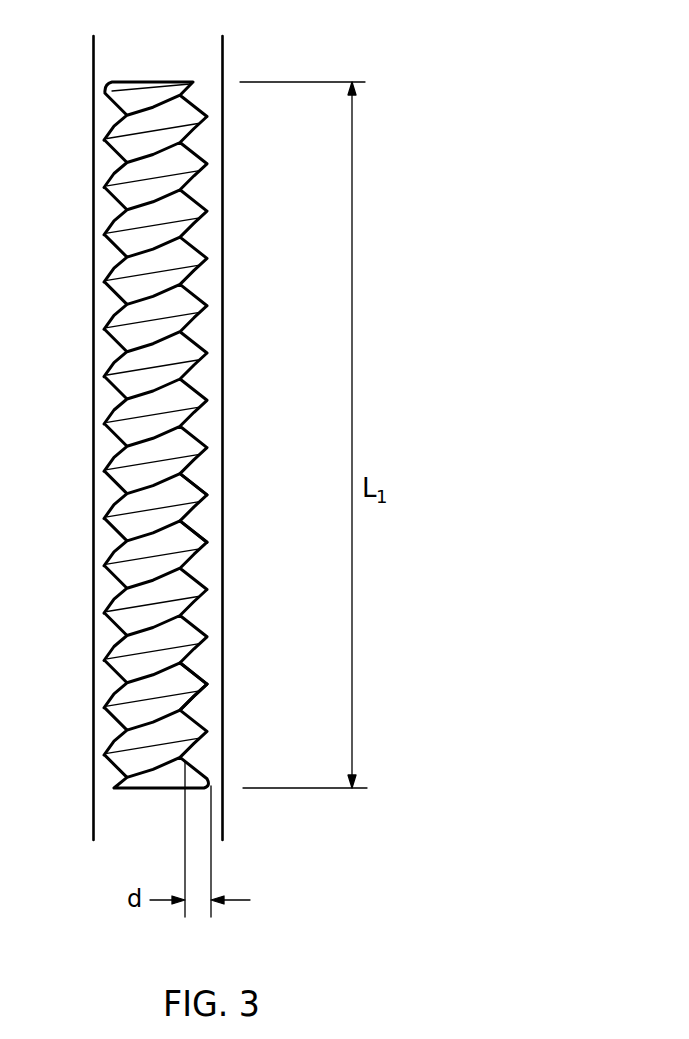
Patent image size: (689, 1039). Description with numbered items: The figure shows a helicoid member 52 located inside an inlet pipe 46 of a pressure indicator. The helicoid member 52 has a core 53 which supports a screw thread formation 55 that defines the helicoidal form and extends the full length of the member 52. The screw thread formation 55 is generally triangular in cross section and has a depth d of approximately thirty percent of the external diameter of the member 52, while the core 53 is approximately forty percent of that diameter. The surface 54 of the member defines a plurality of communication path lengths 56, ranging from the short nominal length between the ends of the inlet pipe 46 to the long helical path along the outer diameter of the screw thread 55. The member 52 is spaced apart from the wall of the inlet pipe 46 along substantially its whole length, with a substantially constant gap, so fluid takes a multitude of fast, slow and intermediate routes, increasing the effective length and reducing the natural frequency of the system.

The inlet pipe 46 is at (93, 331).
The helicoid member 52 is at (108, 514).
The core 53 is at (190, 708).
The surface 54 is at (188, 487).
The screw thread formation 55 is at (192, 674).
The communication path lengths 56 is at (188, 539).